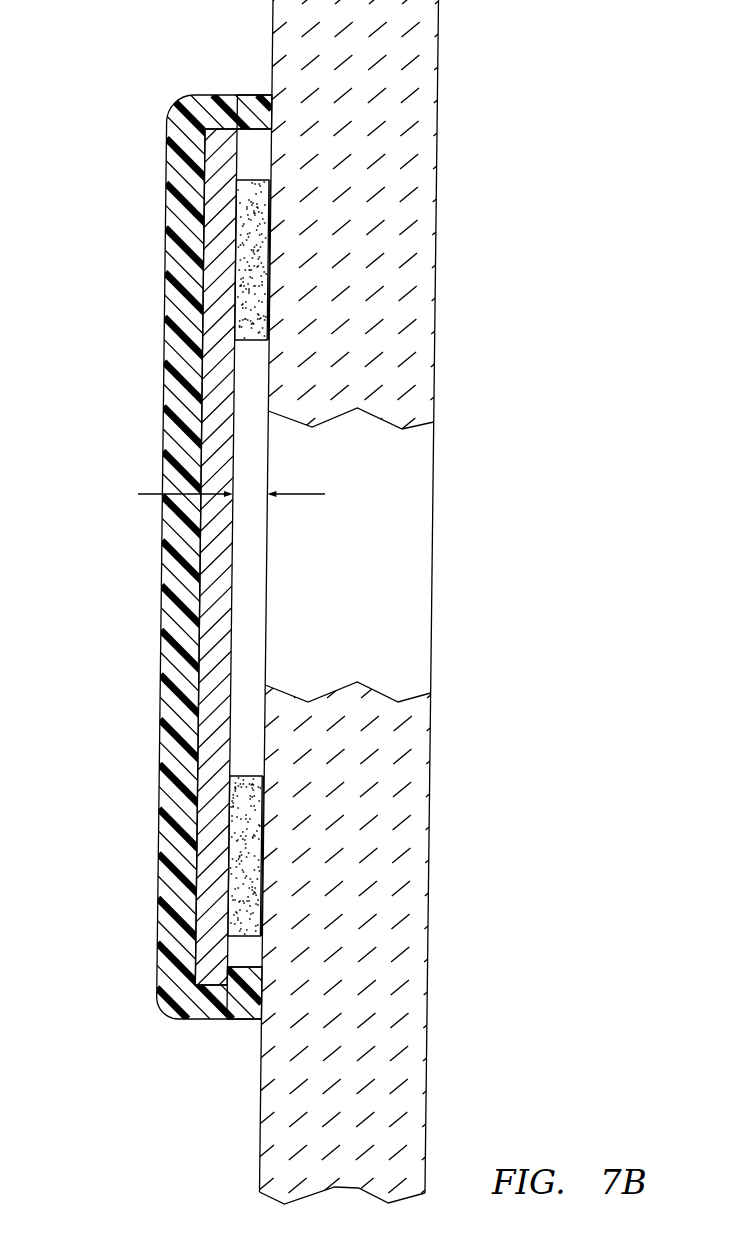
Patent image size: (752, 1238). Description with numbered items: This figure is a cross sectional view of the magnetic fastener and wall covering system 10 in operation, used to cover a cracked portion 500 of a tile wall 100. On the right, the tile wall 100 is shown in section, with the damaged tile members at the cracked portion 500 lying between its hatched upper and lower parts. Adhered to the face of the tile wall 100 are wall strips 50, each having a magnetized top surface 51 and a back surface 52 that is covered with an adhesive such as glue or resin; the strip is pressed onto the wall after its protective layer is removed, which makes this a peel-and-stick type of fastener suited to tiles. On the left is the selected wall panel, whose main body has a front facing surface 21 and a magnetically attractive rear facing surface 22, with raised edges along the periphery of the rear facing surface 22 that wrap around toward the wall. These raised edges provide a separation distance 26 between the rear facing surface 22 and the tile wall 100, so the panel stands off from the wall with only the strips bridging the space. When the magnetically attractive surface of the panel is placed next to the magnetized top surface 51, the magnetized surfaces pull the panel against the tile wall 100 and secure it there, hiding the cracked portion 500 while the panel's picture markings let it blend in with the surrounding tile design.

The system 10 is at (200, 544).
The tile wall 100 is at (415, 23).
The front facing surface 21 is at (172, 395).
The magnetically attractive rear facing surface 22 is at (218, 180).
The separation distance 26 is at (148, 496).
The wall strip 50 is at (257, 197).
The magnetized top surface 51 is at (237, 258).
The back surface 52 is at (272, 258).
The cracked portion 500 is at (378, 553).